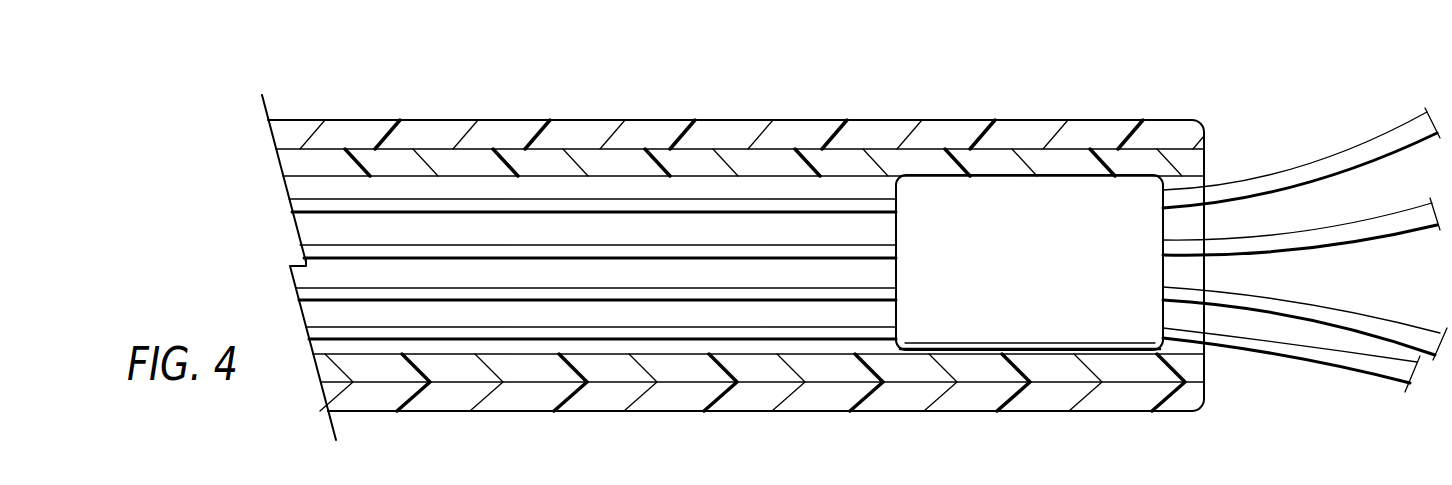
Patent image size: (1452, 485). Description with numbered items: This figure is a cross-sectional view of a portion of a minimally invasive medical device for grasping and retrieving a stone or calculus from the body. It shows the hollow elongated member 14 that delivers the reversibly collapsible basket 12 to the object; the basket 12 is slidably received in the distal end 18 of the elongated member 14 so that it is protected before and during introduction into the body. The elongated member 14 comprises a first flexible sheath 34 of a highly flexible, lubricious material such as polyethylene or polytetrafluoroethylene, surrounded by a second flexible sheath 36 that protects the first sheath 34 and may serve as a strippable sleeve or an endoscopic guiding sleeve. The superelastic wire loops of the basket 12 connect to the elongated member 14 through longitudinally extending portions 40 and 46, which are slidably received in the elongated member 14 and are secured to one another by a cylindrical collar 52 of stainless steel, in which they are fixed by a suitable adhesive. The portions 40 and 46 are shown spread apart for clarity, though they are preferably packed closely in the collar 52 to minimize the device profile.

The reversibly collapsible basket 12 is at (1358, 252).
The elongated member 14 is at (768, 103).
The distal end 18 is at (967, 115).
The first flexible sheath 34 is at (597, 160).
The second flexible sheath 36 is at (808, 405).
The longitudinally extending portion 40 is at (502, 203).
The longitudinally extending portion 46 is at (450, 248).
The cylindrical collar 52 is at (1132, 182).